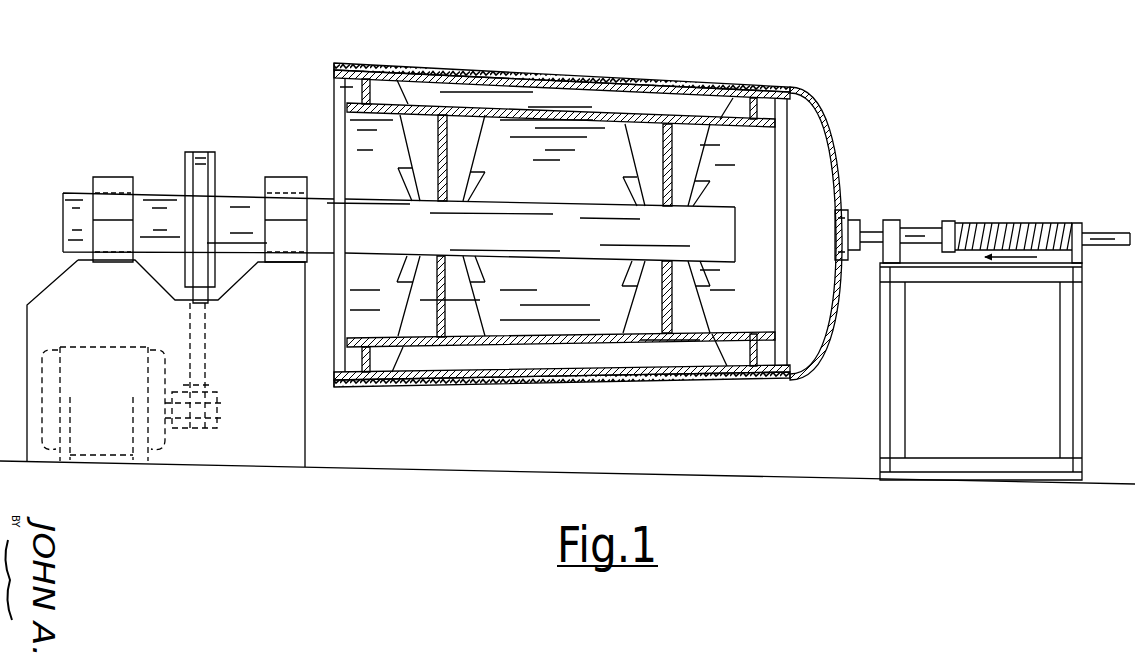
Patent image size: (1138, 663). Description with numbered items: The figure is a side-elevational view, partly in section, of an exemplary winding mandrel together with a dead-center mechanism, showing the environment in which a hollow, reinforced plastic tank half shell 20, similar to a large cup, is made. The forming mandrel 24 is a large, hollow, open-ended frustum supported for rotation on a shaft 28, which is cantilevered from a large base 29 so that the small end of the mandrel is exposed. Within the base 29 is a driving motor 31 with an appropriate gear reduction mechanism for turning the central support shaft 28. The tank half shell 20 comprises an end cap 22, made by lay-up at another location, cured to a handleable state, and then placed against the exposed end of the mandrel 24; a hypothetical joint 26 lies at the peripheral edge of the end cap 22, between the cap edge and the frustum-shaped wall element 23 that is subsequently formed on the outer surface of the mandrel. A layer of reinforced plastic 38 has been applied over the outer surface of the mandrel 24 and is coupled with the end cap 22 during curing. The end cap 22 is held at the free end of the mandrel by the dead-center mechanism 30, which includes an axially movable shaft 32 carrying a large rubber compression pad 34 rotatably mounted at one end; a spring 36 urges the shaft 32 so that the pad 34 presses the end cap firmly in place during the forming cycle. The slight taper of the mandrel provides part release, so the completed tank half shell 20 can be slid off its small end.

The tank half shell 20 is at (441, 63).
The end cap 22 is at (838, 123).
The frustum-shaped wall element 23 is at (609, 73).
The forming mandrel 24 is at (329, 116).
The hypothetical joint 26 is at (784, 89).
The shaft 28 is at (380, 210).
The base 29 is at (55, 268).
The dead-center mechanism 30 is at (1045, 221).
The driving motor 31 is at (80, 347).
The axially movable shaft 32 is at (918, 227).
The rubber compression pad 34 is at (872, 175).
The spring 36 is at (1013, 222).
The layer of reinforced plastic 38 is at (545, 78).